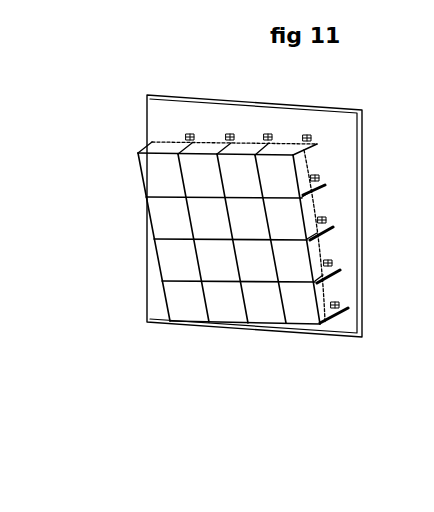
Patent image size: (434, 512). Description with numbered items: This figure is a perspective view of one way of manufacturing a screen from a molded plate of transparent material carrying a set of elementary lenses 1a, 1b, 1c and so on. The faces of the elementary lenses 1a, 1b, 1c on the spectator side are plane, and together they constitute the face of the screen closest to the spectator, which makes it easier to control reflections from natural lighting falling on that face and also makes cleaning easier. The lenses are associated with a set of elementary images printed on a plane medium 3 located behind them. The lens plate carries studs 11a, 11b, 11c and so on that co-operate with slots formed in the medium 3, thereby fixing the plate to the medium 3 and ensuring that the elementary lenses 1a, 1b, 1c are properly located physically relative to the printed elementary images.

The plane medium 3 is at (337, 178).
The elementary lens 1a is at (158, 178).
The elementary lens 1b is at (200, 180).
The elementary lens 1c is at (237, 180).
The stud 11a is at (192, 133).
The stud 11b is at (232, 133).
The stud 11c is at (268, 133).